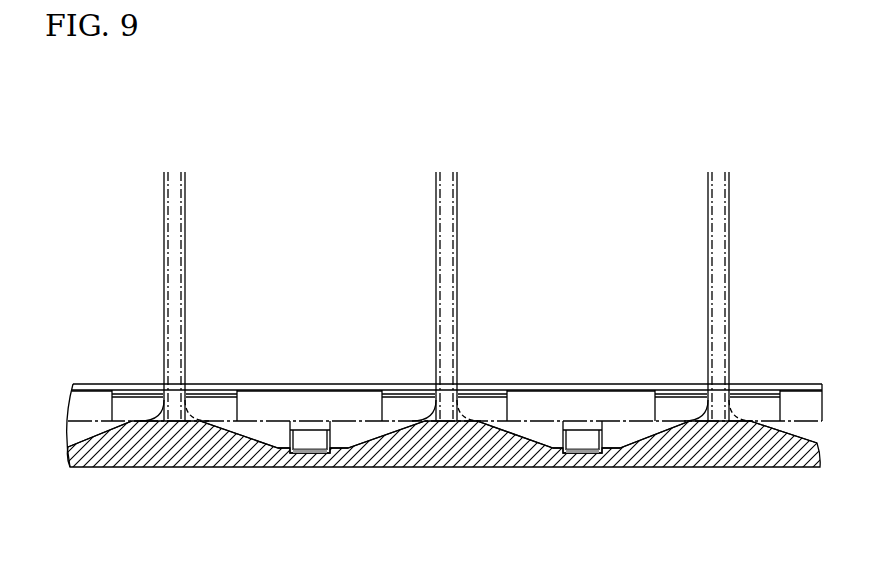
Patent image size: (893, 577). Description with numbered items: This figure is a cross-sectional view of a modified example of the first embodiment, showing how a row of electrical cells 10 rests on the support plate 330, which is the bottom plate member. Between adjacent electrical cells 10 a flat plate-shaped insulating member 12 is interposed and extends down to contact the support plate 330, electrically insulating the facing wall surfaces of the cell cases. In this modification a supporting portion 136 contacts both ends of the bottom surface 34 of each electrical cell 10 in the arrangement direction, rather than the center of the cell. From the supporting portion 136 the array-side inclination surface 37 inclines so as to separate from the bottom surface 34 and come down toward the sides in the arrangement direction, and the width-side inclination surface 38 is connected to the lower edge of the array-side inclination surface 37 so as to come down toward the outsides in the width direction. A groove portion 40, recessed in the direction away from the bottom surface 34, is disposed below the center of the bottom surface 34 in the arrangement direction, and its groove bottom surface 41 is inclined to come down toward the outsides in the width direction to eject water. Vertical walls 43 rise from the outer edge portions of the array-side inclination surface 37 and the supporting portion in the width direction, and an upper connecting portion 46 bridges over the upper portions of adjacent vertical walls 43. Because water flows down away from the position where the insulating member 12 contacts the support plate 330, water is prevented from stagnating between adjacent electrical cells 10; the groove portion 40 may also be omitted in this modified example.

The electrical cell 10 is at (767, 180).
The insulating member 12 is at (713, 177).
The bottom surface 34 is at (800, 445).
The array-side inclination surface 37 is at (647, 432).
The width-side inclination surface 38 is at (623, 433).
The groove portion 40 is at (569, 433).
The groove bottom surface 41 is at (588, 440).
The vertical wall 43 is at (800, 400).
The upper connecting portion 46 is at (748, 393).
The supporting portion 136 is at (700, 421).
The support plate 330 is at (440, 468).